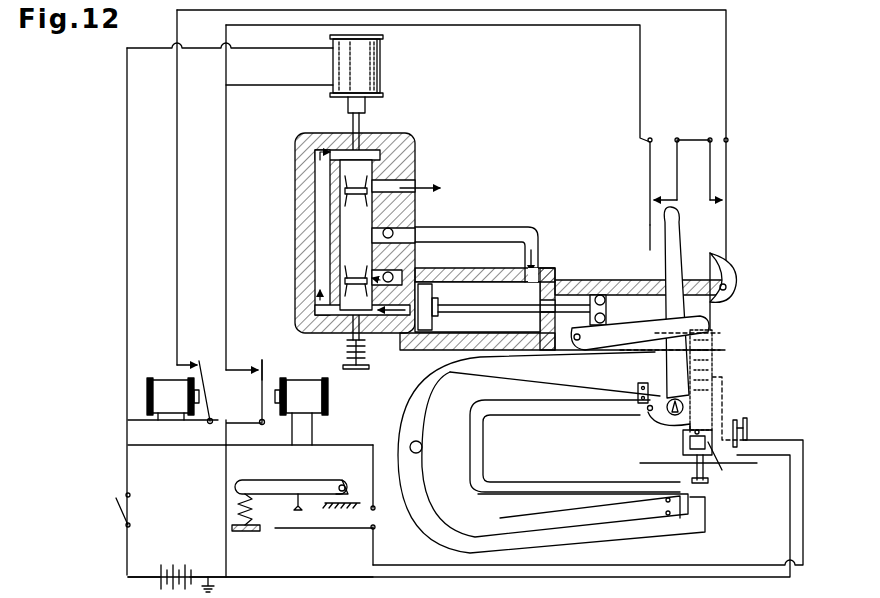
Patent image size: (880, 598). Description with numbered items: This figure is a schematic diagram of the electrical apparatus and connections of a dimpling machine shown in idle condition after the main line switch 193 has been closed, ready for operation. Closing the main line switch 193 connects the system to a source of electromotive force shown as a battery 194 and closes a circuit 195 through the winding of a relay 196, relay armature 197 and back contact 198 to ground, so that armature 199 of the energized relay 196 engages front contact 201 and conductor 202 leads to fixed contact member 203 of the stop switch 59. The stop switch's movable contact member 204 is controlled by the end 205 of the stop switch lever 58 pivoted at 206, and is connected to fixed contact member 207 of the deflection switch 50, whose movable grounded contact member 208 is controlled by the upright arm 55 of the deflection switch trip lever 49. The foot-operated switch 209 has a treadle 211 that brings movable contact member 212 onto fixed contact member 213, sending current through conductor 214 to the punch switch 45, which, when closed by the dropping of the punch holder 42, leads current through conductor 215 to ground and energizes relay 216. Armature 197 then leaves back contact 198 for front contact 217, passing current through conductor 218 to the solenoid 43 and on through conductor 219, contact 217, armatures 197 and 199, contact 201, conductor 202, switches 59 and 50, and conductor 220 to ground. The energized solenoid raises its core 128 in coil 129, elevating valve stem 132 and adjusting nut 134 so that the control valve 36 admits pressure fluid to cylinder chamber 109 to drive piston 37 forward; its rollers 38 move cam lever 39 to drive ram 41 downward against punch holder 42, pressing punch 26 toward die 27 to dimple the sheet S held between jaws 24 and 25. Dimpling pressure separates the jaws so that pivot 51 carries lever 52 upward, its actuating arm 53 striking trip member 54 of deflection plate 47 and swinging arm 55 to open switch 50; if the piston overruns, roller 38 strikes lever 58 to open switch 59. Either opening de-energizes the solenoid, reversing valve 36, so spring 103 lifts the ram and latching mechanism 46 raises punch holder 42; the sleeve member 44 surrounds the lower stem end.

The upper jaw 24 is at (560, 408).
The lower jaw 25 is at (550, 482).
The dimpling punch 26 is at (696, 460).
The dimpling die 27 is at (708, 483).
The control valve 36 is at (420, 150).
The piston 37 is at (430, 290).
The rollers 38 is at (616, 278).
The cam lever 39 is at (636, 326).
The ram 41 is at (724, 390).
The punch holder 42 is at (716, 457).
The solenoid 43 is at (384, 46).
The sleeve member 44 is at (712, 372).
The punch switch 45 is at (762, 408).
The latching mechanism 46 is at (683, 447).
The deflection plate 47 is at (524, 404).
The deflection switch trip lever 49 is at (664, 356).
The deflection switch 50 is at (642, 204).
The pivot 51 is at (672, 418).
The lever 52 is at (678, 383).
The actuating arm 53 is at (648, 411).
The trip member 54 is at (636, 390).
The upright arm 55 is at (666, 243).
The stop switch lever 58 is at (732, 270).
The stop switch 59 is at (736, 172).
The work sheet S is at (640, 462).
The spring 103 is at (712, 350).
The cylinder chamber 109 is at (416, 350).
The core 128 is at (348, 92).
The coil 129 is at (381, 80).
The valve stem 132 is at (360, 212).
The upper adjusting nut 134 is at (362, 126).
The main line switch 193 is at (134, 500).
The battery 194 is at (176, 556).
The circuit 195 is at (118, 445).
The relay 196 is at (180, 403).
The relay armature 197 is at (262, 392).
The back contact 198 is at (236, 365).
The armature 199 is at (205, 360).
The front contact 201 is at (182, 362).
The conductor 202 is at (712, 14).
The fixed contact member 203 is at (728, 202).
The movable contact member 204 is at (715, 222).
The lever end 205 is at (722, 258).
The pivot 206 is at (727, 286).
The fixed contact member 207 is at (690, 170).
The movable grounded contact member 208 is at (646, 157).
The foot-operated switch 209 is at (302, 480).
The treadle 211 is at (248, 480).
The movable contact member 212 is at (298, 512).
The fixed contact member 213 is at (338, 531).
The conductor 214 is at (798, 440).
The conductor 215 is at (782, 458).
The relay 216 is at (312, 403).
The front contact 217 is at (270, 366).
The conductor 218 is at (298, 50).
The conductor 219 is at (280, 130).
The conductor 220 is at (546, 28).